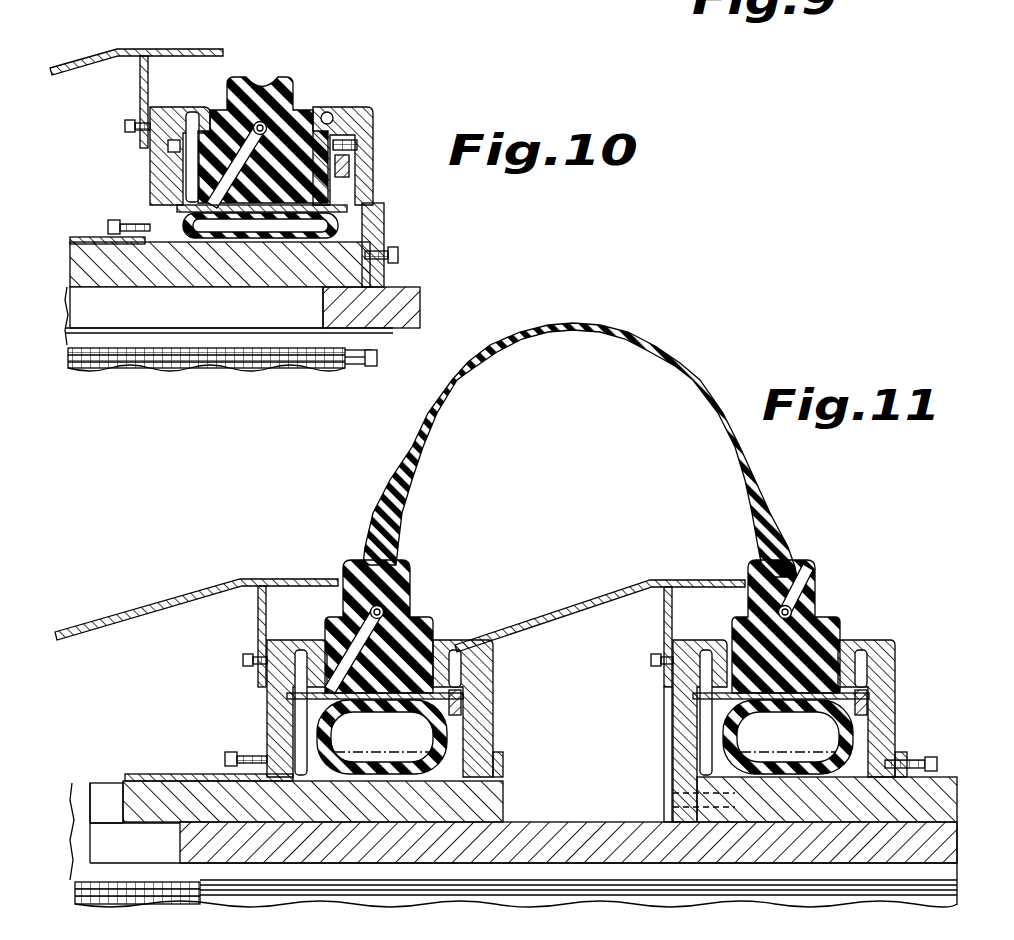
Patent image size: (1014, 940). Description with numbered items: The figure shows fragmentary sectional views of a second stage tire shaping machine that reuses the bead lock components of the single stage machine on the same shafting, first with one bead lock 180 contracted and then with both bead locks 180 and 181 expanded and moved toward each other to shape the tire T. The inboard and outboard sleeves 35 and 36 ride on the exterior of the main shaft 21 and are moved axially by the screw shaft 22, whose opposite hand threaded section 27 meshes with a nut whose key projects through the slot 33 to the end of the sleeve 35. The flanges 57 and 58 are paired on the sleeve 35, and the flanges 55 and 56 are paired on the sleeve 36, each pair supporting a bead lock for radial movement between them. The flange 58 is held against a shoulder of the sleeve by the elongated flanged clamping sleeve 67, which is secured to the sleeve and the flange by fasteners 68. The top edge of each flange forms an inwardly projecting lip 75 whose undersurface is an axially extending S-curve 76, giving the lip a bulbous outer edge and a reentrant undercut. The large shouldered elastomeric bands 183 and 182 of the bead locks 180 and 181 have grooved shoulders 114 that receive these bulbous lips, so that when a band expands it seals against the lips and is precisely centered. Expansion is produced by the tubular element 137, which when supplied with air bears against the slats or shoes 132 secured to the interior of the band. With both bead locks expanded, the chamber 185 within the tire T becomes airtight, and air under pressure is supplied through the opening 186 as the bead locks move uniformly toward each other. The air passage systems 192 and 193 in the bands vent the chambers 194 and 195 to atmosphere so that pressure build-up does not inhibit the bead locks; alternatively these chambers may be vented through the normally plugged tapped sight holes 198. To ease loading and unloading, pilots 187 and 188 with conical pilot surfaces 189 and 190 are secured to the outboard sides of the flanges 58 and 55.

In FIG. 10, the pilot 187 is at (177, 47).
In FIG. 11, the pilot 187 is at (262, 582).
In FIG. 10, the bead lock 180 is at (300, 80).
In FIG. 11, the bead lock 180 is at (420, 595).
In FIG. 10, the inwardly projecting lip 75 is at (318, 112).
In FIG. 10, the S-curve undersurface 76 is at (333, 104).
In FIG. 10, the reentrant shoulders 114 is at (370, 117).
In FIG. 10, the tapped sight holes 198 is at (372, 166).
In FIG. 11, the tapped sight holes 198 is at (465, 711).
In FIG. 10, the flange 57 is at (372, 198).
In FIG. 10, the flange 58 is at (150, 182).
In FIG. 11, the flange 58 is at (262, 727).
In FIG. 10, the fasteners 68 is at (115, 220).
In FIG. 11, the fasteners 68 is at (230, 752).
In FIG. 10, the flanged clamping sleeve 67 is at (82, 236).
In FIG. 11, the flanged clamping sleeve 67 is at (200, 773).
In FIG. 10, the inboard sleeve 35 is at (170, 270).
In FIG. 11, the inboard sleeve 35 is at (170, 805).
In FIG. 10, the tubular element 137 is at (267, 243).
In FIG. 11, the tubular element 137 is at (330, 750).
In FIG. 10, the main shaft 21 is at (403, 297).
In FIG. 11, the main shaft 21 is at (530, 822).
In FIG. 10, the slot 33 is at (125, 325).
In FIG. 11, the slot 33 is at (108, 800).
In FIG. 10, the threaded section 27 is at (193, 368).
In FIG. 11, the threaded section 27 is at (516, 894).
In FIG. 10, the screw shaft 22 is at (375, 364).
In FIG. 11, the screw shaft 22 is at (395, 882).
In FIG. 11, the conical pilot surface 189 is at (178, 600).
In FIG. 11, the air passage system 192 is at (362, 572).
In FIG. 11, the elastomeric band 183 is at (433, 622).
In FIG. 11, the conical pilot surface 190 is at (581, 603).
In FIG. 11, the pilot 188 is at (698, 582).
In FIG. 11, the air passage system 193 is at (810, 568).
In FIG. 11, the bead lock 181 is at (822, 605).
In FIG. 11, the elastomeric band 182 is at (840, 630).
In FIG. 11, the chamber 194 is at (470, 688).
In FIG. 11, the flange 56 is at (496, 737).
In FIG. 11, the flange 55 is at (675, 742).
In FIG. 11, the slats or shoes 132 is at (830, 707).
In FIG. 11, the opening 186 is at (668, 802).
In FIG. 11, the chamber 195 is at (880, 693).
In FIG. 11, the outboard sleeve 36 is at (860, 810).
In FIG. 11, the tire T is at (625, 323).
In FIG. 11, the chamber 185 is at (566, 481).